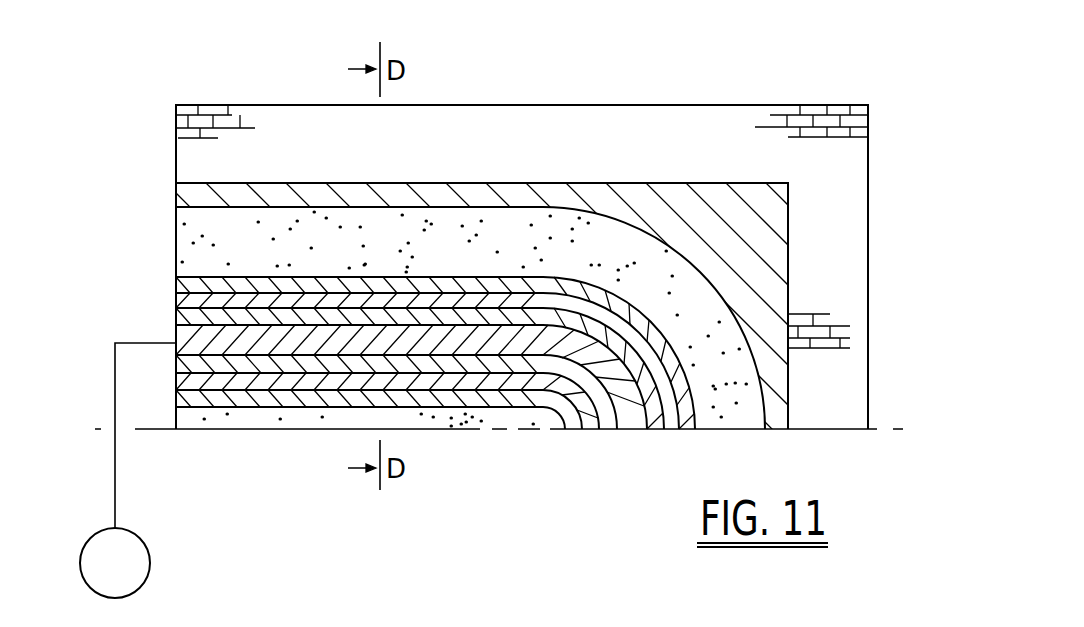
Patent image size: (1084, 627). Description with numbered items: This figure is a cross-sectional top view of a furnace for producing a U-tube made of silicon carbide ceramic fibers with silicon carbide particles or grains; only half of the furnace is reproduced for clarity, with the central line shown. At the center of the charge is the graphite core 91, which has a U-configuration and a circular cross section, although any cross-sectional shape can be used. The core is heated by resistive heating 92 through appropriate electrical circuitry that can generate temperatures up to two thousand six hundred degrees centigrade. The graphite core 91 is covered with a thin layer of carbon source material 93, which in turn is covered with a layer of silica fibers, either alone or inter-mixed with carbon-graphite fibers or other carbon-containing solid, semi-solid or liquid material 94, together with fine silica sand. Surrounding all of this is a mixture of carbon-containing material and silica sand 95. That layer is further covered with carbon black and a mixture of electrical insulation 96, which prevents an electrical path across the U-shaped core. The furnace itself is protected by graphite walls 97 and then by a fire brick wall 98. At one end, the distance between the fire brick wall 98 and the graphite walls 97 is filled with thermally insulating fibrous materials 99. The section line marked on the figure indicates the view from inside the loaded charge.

The graphite core 91 is at (176, 335).
The resistive heating 92 is at (150, 578).
The carbon source material 93 is at (178, 318).
The layer of silica fibers 94 is at (176, 300).
The mixture of carbon-containing material and silica sand 95 is at (176, 283).
The electrical insulation 96 is at (190, 228).
The graphite walls 97 is at (443, 183).
The fire brick wall 98 is at (290, 123).
The thermally insulating fibrous materials 99 is at (735, 282).